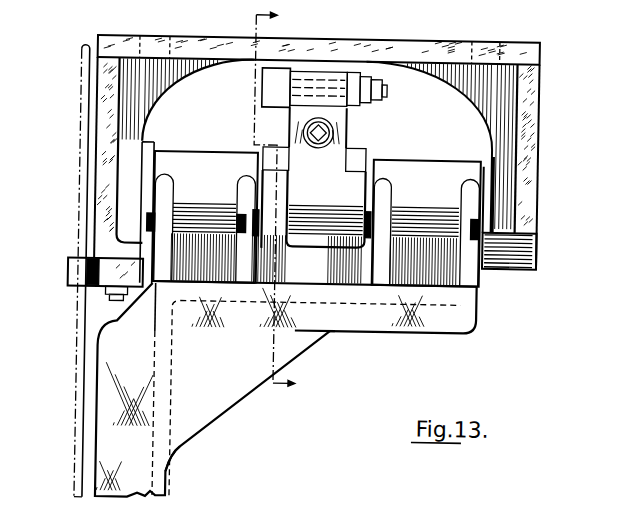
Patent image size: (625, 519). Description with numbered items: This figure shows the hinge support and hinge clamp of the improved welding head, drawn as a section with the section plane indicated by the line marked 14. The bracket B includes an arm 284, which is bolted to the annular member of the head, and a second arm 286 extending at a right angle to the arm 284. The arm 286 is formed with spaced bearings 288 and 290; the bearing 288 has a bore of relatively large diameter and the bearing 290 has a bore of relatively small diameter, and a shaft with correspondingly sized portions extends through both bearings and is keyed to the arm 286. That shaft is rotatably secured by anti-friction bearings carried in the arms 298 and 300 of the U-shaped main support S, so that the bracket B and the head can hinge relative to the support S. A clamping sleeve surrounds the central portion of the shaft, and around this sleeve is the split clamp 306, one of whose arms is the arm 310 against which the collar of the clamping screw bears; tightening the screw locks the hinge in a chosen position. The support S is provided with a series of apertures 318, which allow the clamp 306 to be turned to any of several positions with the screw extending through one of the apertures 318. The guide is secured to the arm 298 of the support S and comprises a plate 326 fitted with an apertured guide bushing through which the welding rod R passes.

The apertures 318 is at (152, 44).
The welding rod R is at (81, 57).
The arm 298 is at (103, 202).
The main support S is at (539, 111).
The arm 300 is at (537, 232).
The plate 326 is at (76, 275).
The bearing 288 is at (199, 158).
The bearing 290 is at (439, 144).
The arm 310 is at (327, 178).
The section line 14- 14 is at (286, 199).
The second arm 286 is at (422, 324).
The split clamp 306 is at (346, 224).
The arm 284 is at (106, 358).
The bracket B is at (198, 450).